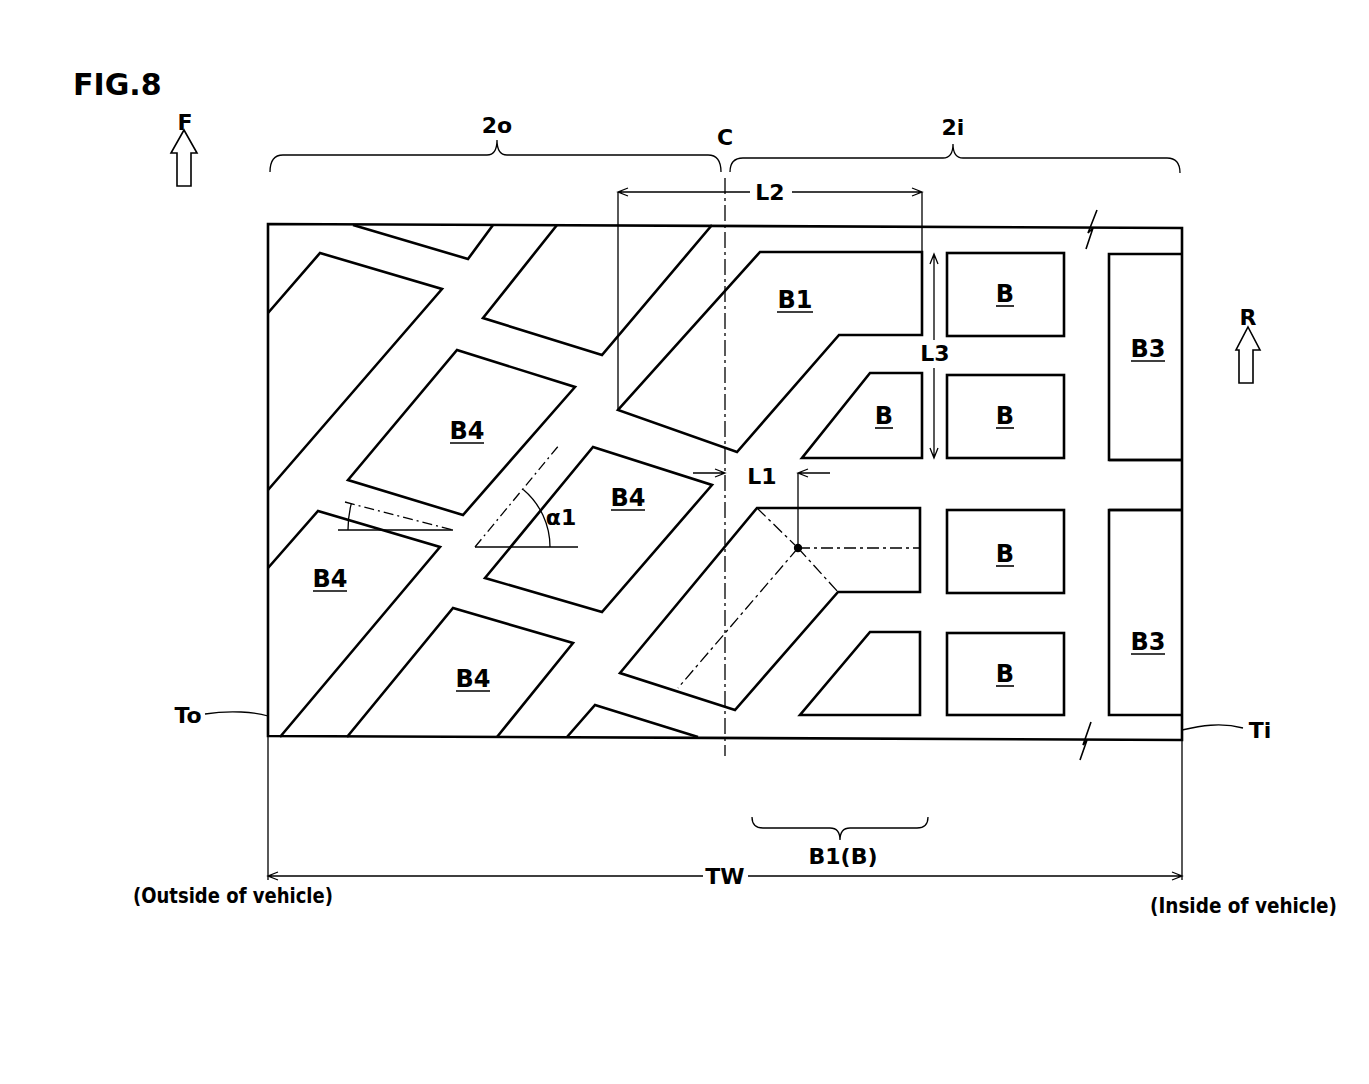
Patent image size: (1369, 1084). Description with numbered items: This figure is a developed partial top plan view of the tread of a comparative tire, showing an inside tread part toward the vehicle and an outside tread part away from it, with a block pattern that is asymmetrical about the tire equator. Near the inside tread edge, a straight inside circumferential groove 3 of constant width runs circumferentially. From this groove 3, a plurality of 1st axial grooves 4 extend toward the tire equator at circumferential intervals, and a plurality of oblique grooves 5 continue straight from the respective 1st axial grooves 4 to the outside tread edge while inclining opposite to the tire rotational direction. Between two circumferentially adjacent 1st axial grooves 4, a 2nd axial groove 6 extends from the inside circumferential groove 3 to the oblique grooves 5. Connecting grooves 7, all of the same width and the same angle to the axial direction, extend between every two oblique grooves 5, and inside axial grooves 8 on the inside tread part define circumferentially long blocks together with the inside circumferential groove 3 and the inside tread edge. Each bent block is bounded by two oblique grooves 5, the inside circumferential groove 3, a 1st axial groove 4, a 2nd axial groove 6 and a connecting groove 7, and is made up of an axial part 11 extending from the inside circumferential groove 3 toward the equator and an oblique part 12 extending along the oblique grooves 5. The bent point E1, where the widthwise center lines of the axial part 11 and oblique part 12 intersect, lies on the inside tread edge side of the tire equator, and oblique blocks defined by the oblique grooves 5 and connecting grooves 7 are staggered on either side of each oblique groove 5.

The inside circumferential groove 3 is at (1092, 539).
The 1st axial groove 4 is at (1043, 610).
The oblique groove 5 is at (508, 249).
The 2nd axial groove 6 is at (1042, 479).
The connecting groove 7 is at (401, 497).
The inside axial groove 8 is at (1140, 490).
The axial part 11 is at (895, 570).
The oblique part 12 is at (777, 623).
The bent point E1 is at (798, 548).